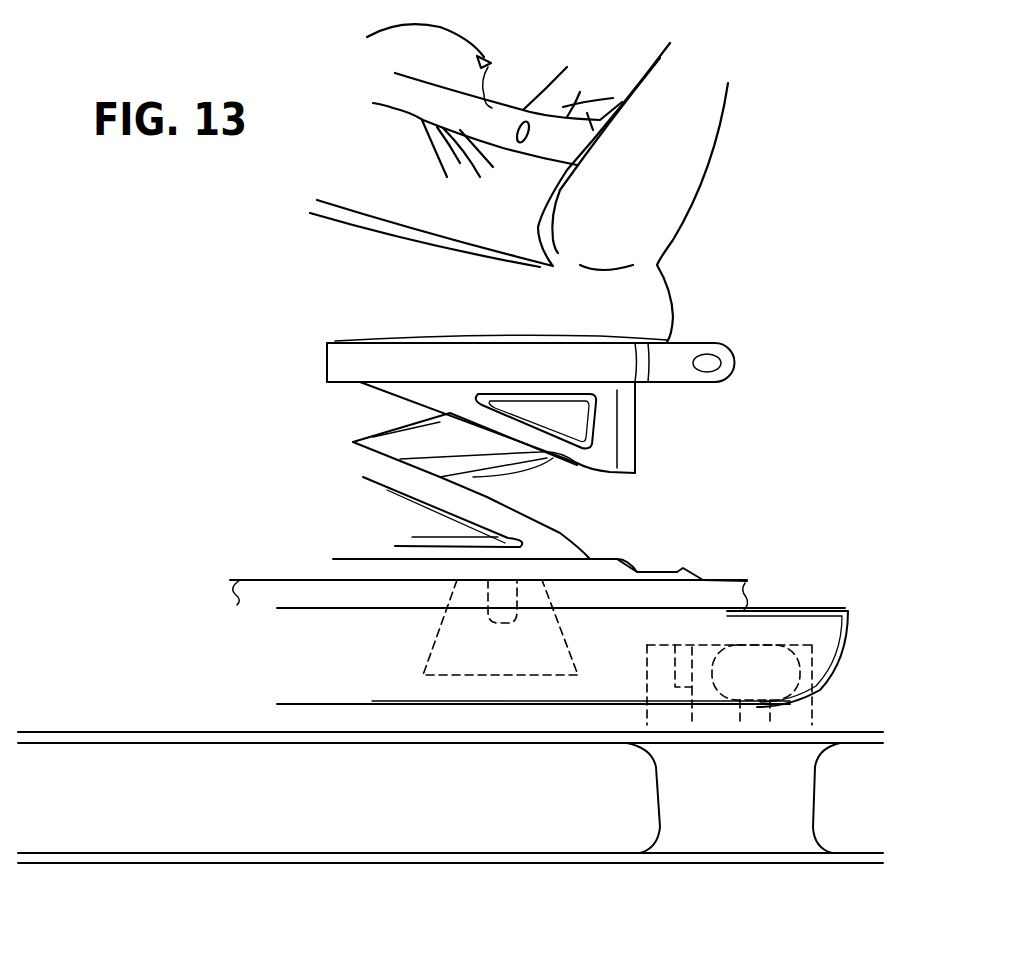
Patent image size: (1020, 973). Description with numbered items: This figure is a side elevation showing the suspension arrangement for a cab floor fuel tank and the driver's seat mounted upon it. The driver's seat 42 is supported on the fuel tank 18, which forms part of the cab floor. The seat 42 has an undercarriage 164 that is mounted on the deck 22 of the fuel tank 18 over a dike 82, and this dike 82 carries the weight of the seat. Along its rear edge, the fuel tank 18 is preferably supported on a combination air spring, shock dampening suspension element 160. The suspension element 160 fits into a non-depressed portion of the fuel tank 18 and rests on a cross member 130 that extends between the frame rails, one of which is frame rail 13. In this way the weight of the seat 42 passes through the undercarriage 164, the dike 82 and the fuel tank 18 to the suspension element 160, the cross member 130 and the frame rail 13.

The driver's seat 42 is at (692, 315).
The undercarriage 164 is at (637, 418).
The dike 82 is at (519, 611).
The fuel tank 18 is at (746, 582).
The deck 22 is at (253, 590).
The suspension element 160 is at (807, 708).
The cross member 130 is at (687, 783).
The frame rail 13 is at (770, 833).